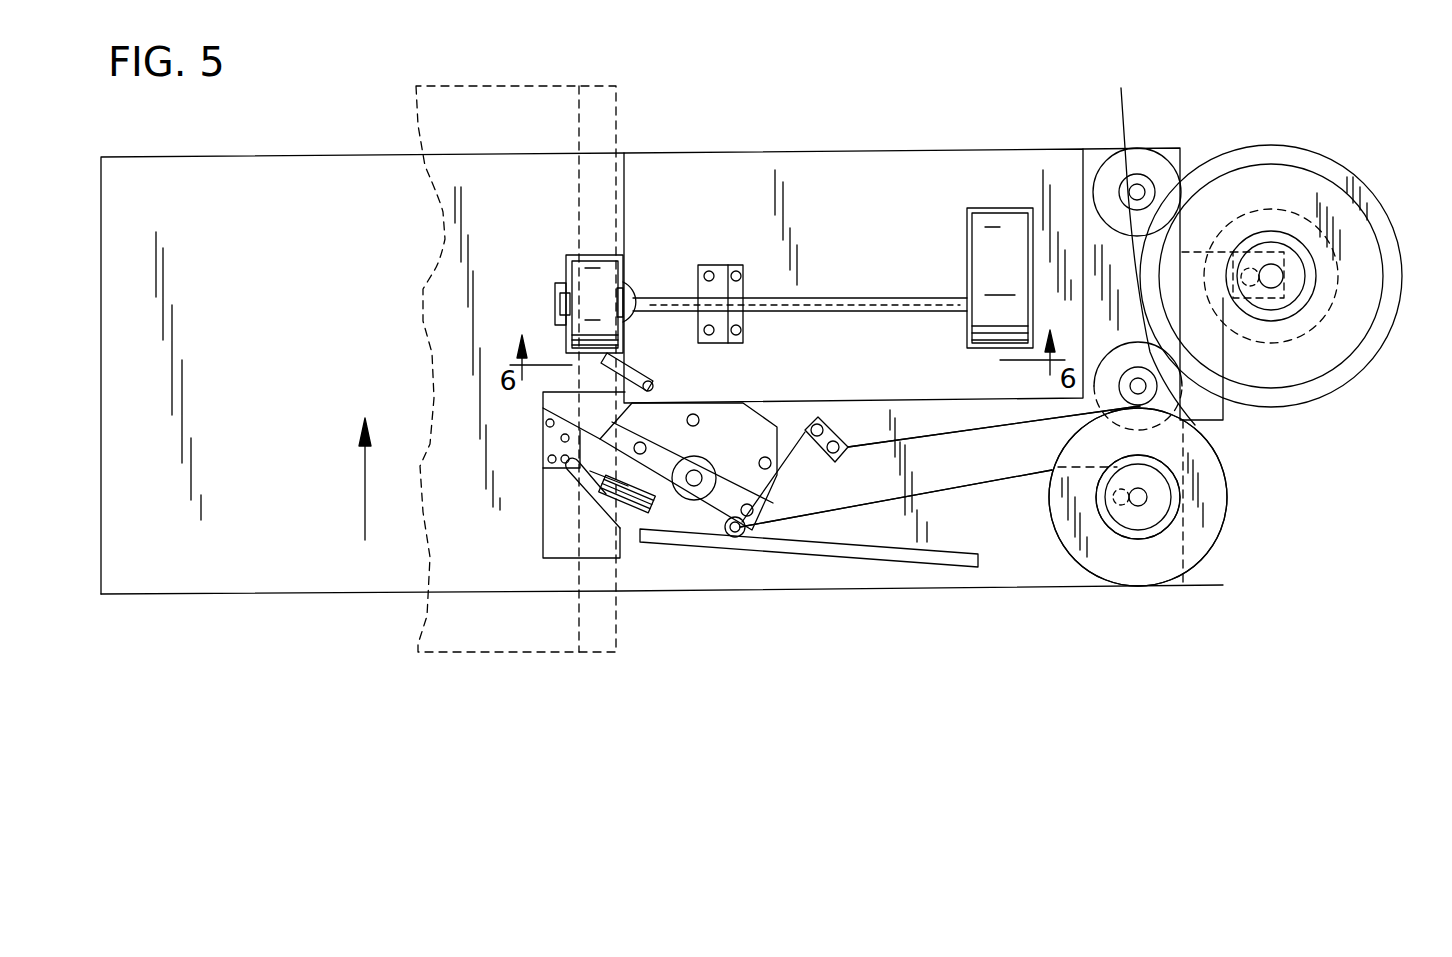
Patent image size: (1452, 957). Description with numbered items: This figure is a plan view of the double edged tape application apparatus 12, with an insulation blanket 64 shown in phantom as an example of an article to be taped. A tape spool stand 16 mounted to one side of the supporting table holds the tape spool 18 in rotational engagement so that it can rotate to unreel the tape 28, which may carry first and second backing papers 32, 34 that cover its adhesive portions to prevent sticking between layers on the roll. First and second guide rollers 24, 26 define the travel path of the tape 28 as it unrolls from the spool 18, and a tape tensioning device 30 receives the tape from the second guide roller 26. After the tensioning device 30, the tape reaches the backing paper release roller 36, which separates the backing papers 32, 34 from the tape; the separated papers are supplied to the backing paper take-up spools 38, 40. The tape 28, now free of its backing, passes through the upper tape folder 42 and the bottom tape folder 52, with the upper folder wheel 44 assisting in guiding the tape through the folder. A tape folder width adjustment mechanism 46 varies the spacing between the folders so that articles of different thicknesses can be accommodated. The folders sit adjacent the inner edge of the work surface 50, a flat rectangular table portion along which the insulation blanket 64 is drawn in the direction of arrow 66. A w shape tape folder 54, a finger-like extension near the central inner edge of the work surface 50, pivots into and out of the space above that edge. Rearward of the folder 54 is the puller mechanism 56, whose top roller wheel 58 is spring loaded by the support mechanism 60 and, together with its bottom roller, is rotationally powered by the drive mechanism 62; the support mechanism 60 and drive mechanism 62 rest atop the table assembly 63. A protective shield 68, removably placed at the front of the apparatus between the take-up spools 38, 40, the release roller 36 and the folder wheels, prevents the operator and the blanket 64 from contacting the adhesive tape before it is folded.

The double edged tape application apparatus 12 is at (786, 658).
The tape spool stand 16 is at (1222, 405).
The tape spool 18 is at (1300, 147).
The first guide roller 24 is at (1137, 145).
The second guide roller 26 is at (1142, 390).
The tape 28 is at (1216, 160).
The tape tensioning device 30 is at (835, 430).
The first backing paper 32 is at (987, 482).
The second backing paper 34 is at (940, 466).
The backing paper release roller 36 is at (738, 537).
The backing paper take-up spool 38 is at (1228, 506).
The backing paper take-up spool 40 is at (1138, 497).
The upper tape folder 42 is at (583, 530).
The upper folder wheel 44 is at (632, 517).
The tape folder width adjustment mechanism 46 is at (720, 443).
The work surface 50 is at (297, 168).
The bottom tape folder 52 is at (557, 553).
The w shape tape folder 54 is at (632, 358).
The puller mechanism 56 is at (656, 282).
The top roller wheel 58 is at (594, 268).
The support mechanism 60 is at (719, 264).
The drive mechanism 62 is at (989, 208).
The table assembly 63 is at (858, 148).
The insulation blanket 64 is at (526, 86).
The arrow 66 is at (365, 463).
The protective shield 68 is at (885, 562).